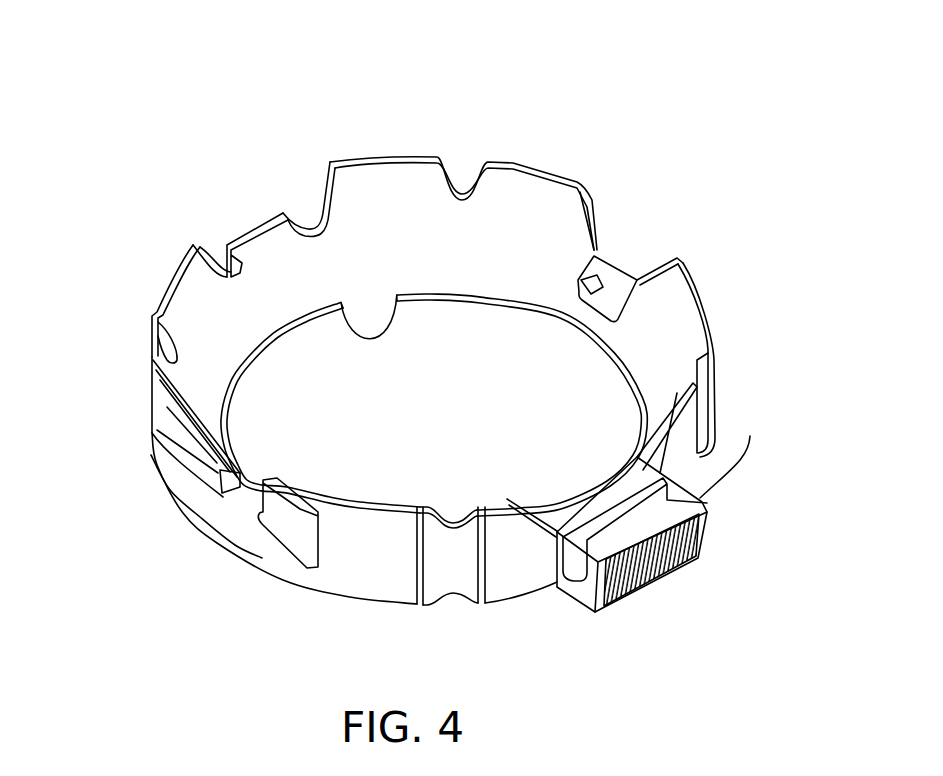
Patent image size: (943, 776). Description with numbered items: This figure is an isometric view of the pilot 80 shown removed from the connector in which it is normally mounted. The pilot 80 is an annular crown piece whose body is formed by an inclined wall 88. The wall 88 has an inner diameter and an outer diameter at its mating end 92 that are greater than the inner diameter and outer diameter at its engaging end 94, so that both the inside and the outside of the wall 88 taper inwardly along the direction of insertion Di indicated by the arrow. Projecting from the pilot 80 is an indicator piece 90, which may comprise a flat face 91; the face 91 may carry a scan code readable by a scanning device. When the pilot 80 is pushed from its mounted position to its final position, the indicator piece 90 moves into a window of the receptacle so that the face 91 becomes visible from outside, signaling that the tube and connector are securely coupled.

The pilot 80 is at (178, 140).
The inclined wall 88 is at (182, 425).
The indicator piece 90 is at (695, 502).
The face 91 is at (603, 585).
The mating end 92 is at (553, 174).
The engaging end 94 is at (340, 322).
The direction of insertion Di is at (403, 209).